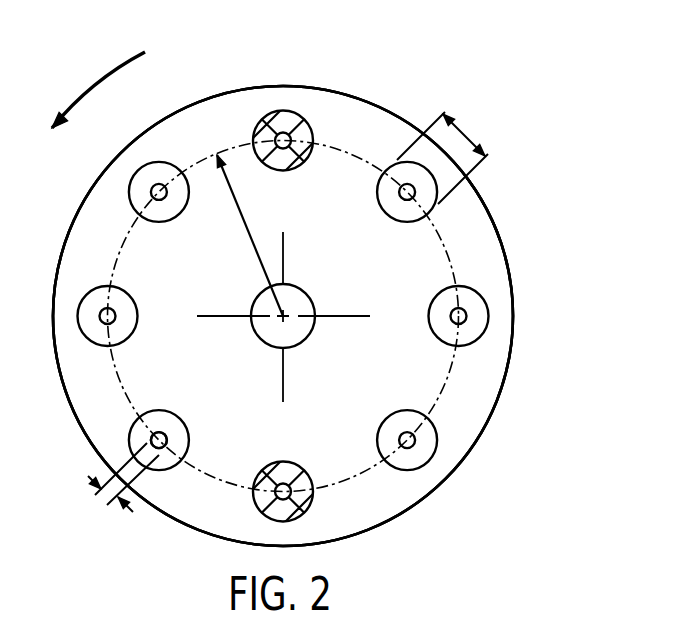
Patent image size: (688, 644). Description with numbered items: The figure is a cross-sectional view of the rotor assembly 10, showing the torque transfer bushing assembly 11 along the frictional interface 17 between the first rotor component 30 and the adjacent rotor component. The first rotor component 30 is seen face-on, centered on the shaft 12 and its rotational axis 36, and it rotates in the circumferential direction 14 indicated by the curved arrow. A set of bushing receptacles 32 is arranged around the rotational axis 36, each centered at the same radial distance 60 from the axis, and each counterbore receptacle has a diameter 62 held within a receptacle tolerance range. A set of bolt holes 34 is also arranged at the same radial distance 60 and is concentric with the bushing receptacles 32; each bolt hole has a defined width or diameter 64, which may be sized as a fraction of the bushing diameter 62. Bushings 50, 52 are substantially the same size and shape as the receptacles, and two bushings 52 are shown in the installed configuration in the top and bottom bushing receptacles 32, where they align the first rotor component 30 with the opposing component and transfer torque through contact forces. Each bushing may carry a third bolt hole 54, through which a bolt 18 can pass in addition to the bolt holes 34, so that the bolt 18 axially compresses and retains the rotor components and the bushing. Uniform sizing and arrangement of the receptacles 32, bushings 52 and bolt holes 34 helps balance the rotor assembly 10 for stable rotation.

The rotor assembly 10 is at (551, 75).
The torque transfer bushing assembly 11 is at (385, 145).
The shaft 12 is at (305, 293).
The circumferential direction 14 is at (96, 81).
The frictional interface 17 is at (492, 246).
The bolt 18 is at (305, 510).
The first rotor component 30 is at (493, 178).
The bushing receptacle 32 is at (440, 437).
The bolt hole 34 is at (104, 322).
The rotational axis 36 is at (260, 341).
The bushing 50 is at (258, 113).
The bushing 52 is at (297, 118).
The third set of bolt holes 54 is at (300, 157).
The radial distance 60 is at (253, 246).
The diameter 62 is at (460, 140).
The bolt hole diameter 64 is at (88, 476).